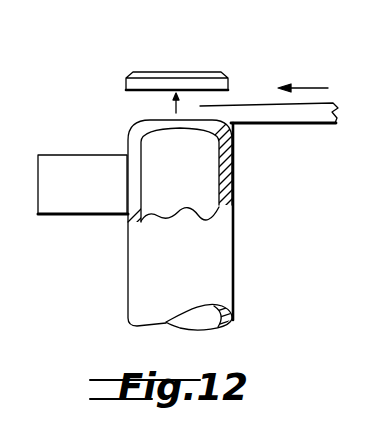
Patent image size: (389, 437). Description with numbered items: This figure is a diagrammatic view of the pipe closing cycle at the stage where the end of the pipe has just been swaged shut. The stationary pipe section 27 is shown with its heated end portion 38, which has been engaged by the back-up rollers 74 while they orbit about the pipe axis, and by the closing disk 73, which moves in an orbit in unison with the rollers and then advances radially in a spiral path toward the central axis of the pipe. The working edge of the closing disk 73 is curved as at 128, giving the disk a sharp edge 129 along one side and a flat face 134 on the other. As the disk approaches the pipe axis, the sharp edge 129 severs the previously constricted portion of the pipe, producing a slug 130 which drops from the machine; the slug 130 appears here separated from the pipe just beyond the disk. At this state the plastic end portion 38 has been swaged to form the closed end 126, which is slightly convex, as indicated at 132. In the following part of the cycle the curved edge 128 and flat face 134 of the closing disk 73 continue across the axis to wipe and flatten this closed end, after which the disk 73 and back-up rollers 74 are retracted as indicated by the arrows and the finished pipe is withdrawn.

The stationary pipe section 27 is at (218, 296).
The closed end 126 is at (148, 131).
The back-up rollers 74 is at (66, 196).
The slug 130 is at (170, 72).
The sharp edge 129 is at (192, 112).
The curved working edge 128 is at (190, 116).
The slightly convex portion of closed end 132 is at (156, 118).
The flat face 134 is at (300, 125).
The closing disk 73 is at (310, 105).
The heated end portion 38 is at (238, 143).